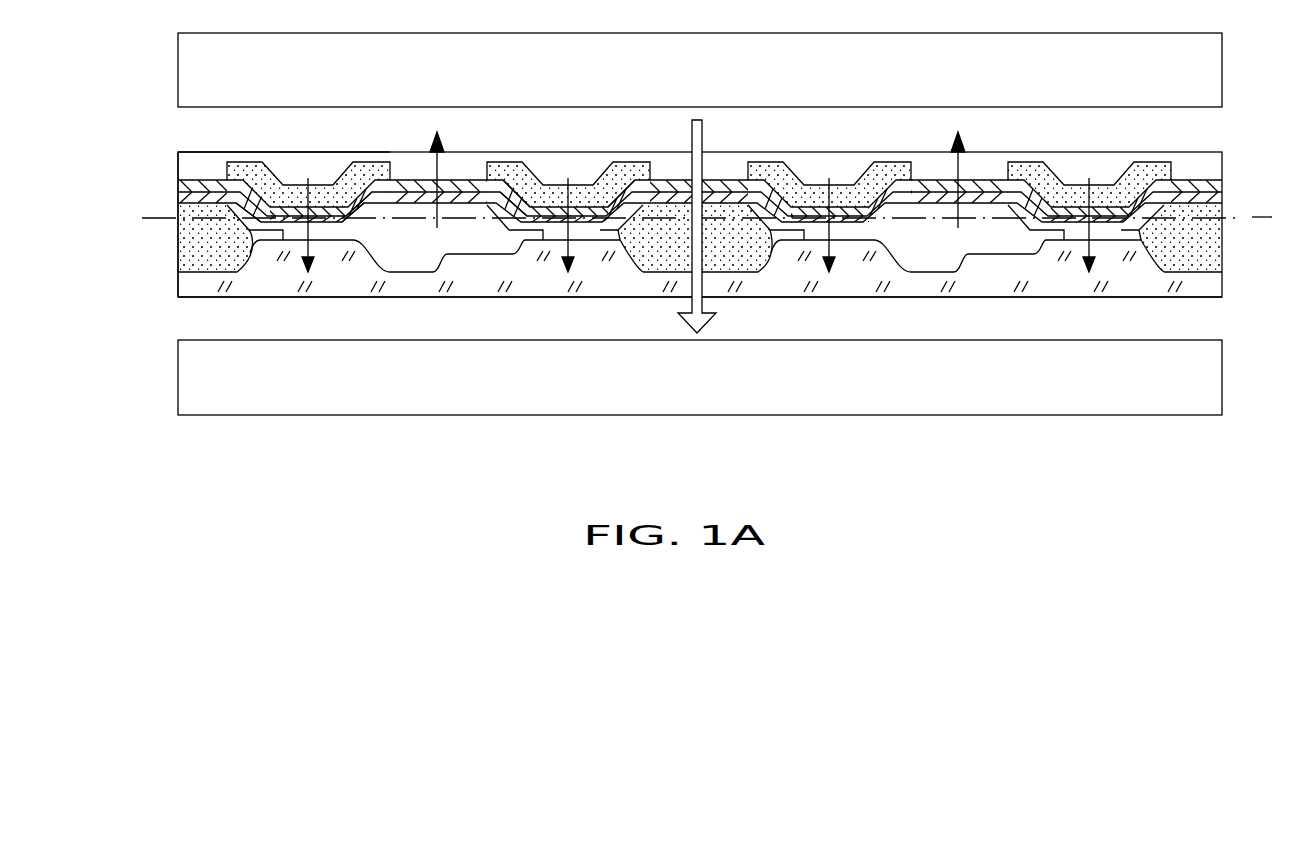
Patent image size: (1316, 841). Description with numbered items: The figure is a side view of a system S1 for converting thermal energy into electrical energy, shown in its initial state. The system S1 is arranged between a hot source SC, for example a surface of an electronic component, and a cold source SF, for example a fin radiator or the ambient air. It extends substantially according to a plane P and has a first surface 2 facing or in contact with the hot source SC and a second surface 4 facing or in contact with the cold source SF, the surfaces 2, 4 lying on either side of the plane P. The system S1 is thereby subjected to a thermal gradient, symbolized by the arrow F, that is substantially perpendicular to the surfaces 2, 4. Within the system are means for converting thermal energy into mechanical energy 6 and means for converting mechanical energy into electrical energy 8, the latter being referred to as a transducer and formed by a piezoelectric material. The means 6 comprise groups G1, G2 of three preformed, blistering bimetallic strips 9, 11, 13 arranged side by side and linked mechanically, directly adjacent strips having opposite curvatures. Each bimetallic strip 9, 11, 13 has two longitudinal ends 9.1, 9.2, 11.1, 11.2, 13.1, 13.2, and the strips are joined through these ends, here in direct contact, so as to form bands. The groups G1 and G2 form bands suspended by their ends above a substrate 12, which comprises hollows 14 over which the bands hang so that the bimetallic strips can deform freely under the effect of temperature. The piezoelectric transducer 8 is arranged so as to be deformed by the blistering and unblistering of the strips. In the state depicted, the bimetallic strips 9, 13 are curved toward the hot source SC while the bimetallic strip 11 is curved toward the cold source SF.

The first surface 2 is at (1198, 298).
The second surface 4 is at (1200, 152).
The means for converting thermal energy into mechanical energy 6 is at (199, 162).
The means for converting mechanical energy into electrical energy 8 is at (285, 156).
The bimetallic strip 9 is at (307, 215).
The longitudinal end 9.1 is at (233, 183).
The longitudinal end 9.2 is at (373, 195).
The bimetallic strip 11 is at (407, 205).
The longitudinal end 11.1 is at (376, 200).
The longitudinal end 11.2 is at (510, 197).
The substrate 12 is at (197, 285).
The bimetallic strip 13 is at (580, 212).
The longitudinal end 13.1 is at (514, 206).
The longitudinal end 13.2 is at (677, 180).
The hollows 14 is at (488, 225).
The group of bimetallic strips G1 is at (425, 258).
The group of bimetallic strips G2 is at (958, 258).
The plane P is at (1262, 217).
The thermal gradient arrow F is at (702, 287).
The system for converting thermal energy into electrical energy S1 is at (147, 189).
The cold source SF is at (193, 76).
The hot source SC is at (195, 372).